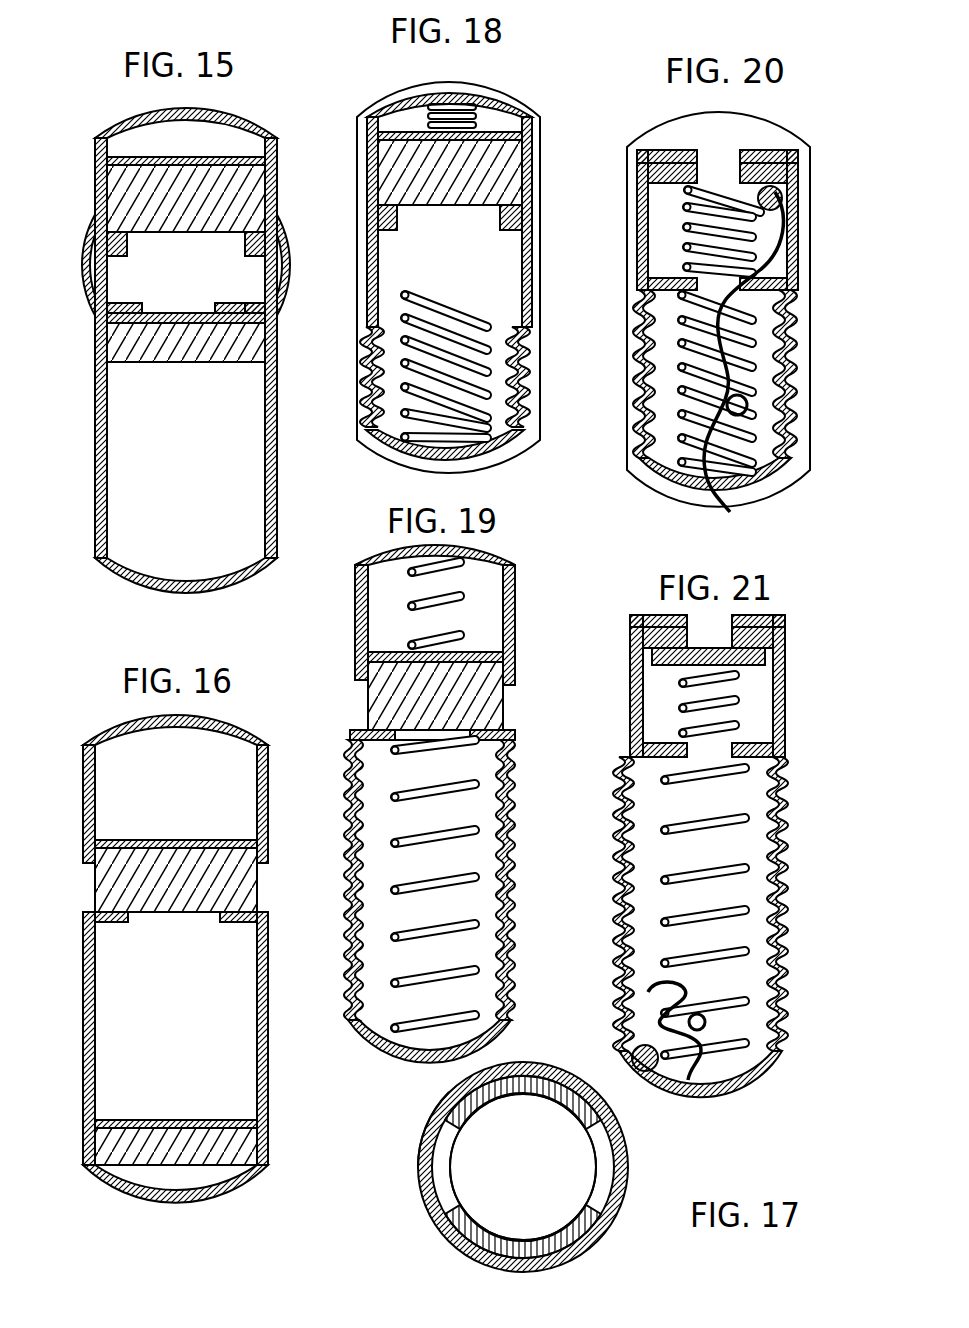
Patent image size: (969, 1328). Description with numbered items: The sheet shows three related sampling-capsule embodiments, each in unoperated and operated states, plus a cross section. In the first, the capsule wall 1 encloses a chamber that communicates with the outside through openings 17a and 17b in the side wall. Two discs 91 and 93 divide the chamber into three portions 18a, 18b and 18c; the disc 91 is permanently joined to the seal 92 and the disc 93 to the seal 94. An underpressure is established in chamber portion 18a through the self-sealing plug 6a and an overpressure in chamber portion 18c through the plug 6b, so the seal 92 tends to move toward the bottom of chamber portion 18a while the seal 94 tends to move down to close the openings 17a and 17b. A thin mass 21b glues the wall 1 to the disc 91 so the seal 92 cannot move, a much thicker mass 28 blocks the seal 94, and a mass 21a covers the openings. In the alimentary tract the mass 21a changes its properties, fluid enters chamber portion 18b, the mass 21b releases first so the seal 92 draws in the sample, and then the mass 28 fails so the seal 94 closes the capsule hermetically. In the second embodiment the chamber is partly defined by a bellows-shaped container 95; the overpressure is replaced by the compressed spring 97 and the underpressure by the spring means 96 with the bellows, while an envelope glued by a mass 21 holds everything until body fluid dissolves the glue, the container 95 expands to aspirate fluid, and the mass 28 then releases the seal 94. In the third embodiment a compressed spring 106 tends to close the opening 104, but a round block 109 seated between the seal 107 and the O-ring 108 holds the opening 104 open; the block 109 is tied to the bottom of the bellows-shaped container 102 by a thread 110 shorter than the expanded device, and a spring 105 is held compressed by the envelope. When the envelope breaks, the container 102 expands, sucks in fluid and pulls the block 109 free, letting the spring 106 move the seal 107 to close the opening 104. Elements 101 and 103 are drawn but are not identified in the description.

In FIG. 15, the wall 1 is at (268, 470).
In FIG. 18, the wall 1 is at (530, 207).
In FIG. 17, the wall 1 is at (612, 1222).
In FIG. 15, the self-sealing plug 6a is at (195, 590).
In FIG. 15, the plug 6b is at (205, 112).
In FIG. 15, the opening 17a is at (270, 262).
In FIG. 16, the opening 17a is at (258, 906).
In FIG. 18, the opening 17a is at (488, 258).
In FIG. 19, the opening 17a is at (515, 735).
In FIG. 17, the opening 17a is at (597, 1185).
In FIG. 15, the opening 17b is at (93, 305).
In FIG. 16, the opening 17b is at (92, 888).
In FIG. 18, the opening 17b is at (378, 228).
In FIG. 17, the opening 17b is at (440, 1178).
In FIG. 15, the chamber portion 18a is at (195, 407).
In FIG. 16, the chamber portion 18a is at (195, 1030).
In FIG. 18, the chamber portion 18a is at (383, 308).
In FIG. 19, the chamber portion 18a is at (423, 773).
In FIG. 15, the chamber portion 18b is at (203, 287).
In FIG. 17, the chamber portion 18b is at (543, 1153).
In FIG. 15, the chamber portion 18c is at (185, 148).
In FIG. 16, the chamber portion 18c is at (185, 769).
In FIG. 18, the chamber portion 18c is at (440, 103).
In FIG. 19, the chamber portion 18c is at (460, 583).
In FIG. 18, the mass 21 is at (528, 345).
In FIG. 15, the mass 21a is at (243, 307).
In FIG. 17, the mass 21a is at (422, 1135).
In FIG. 15, the mass 21b is at (268, 320).
In FIG. 15, the mass 28 is at (272, 228).
In FIG. 18, the mass 28 is at (522, 228).
In FIG. 15, the disc 91 is at (187, 313).
In FIG. 16, the disc 91 is at (187, 1122).
In FIG. 15, the seal 92 is at (160, 355).
In FIG. 16, the seal 92 is at (188, 1150).
In FIG. 15, the disc 93 is at (110, 162).
In FIG. 16, the disc 93 is at (197, 842).
In FIG. 18, the disc 93 is at (495, 136).
In FIG. 19, the disc 93 is at (470, 660).
In FIG. 15, the seal 94 is at (175, 205).
In FIG. 16, the seal 94 is at (203, 880).
In FIG. 18, the seal 94 is at (453, 178).
In FIG. 19, the seal 94 is at (427, 707).
In FIG. 18, the bellows-shaped container 95 is at (485, 420).
In FIG. 19, the bellows-shaped container 95 is at (503, 833).
In FIG. 18, the spring means 96 is at (483, 430).
In FIG. 19, the spring means 96 is at (467, 882).
In FIG. 18, the compressed spring 97 is at (477, 122).
In FIG. 20, the cap body 101 is at (798, 245).
In FIG. 21, the cap body 101 is at (777, 733).
In FIG. 20, the bellows-shaped container 102 is at (795, 310).
In FIG. 21, the bellows-shaped container 102 is at (787, 787).
In FIG. 20, the spring coil 103 is at (755, 368).
In FIG. 21, the spring coil 103 is at (747, 818).
In FIG. 20, the opening 104 is at (715, 173).
In FIG. 21, the opening 104 is at (708, 632).
In FIG. 20, the spring 105 is at (718, 428).
In FIG. 21, the spring 105 is at (737, 875).
In FIG. 20, the compressed spring 106 is at (697, 233).
In FIG. 21, the compressed spring 106 is at (723, 697).
In FIG. 20, the seal 107 is at (735, 212).
In FIG. 21, the seal 107 is at (737, 667).
In FIG. 20, the O-ring 108 is at (762, 177).
In FIG. 21, the O-ring 108 is at (727, 648).
In FIG. 20, the round block 109 is at (800, 310).
In FIG. 21, the round block 109 is at (730, 1000).
In FIG. 20, the thread 110 is at (733, 510).
In FIG. 21, the thread 110 is at (720, 1048).